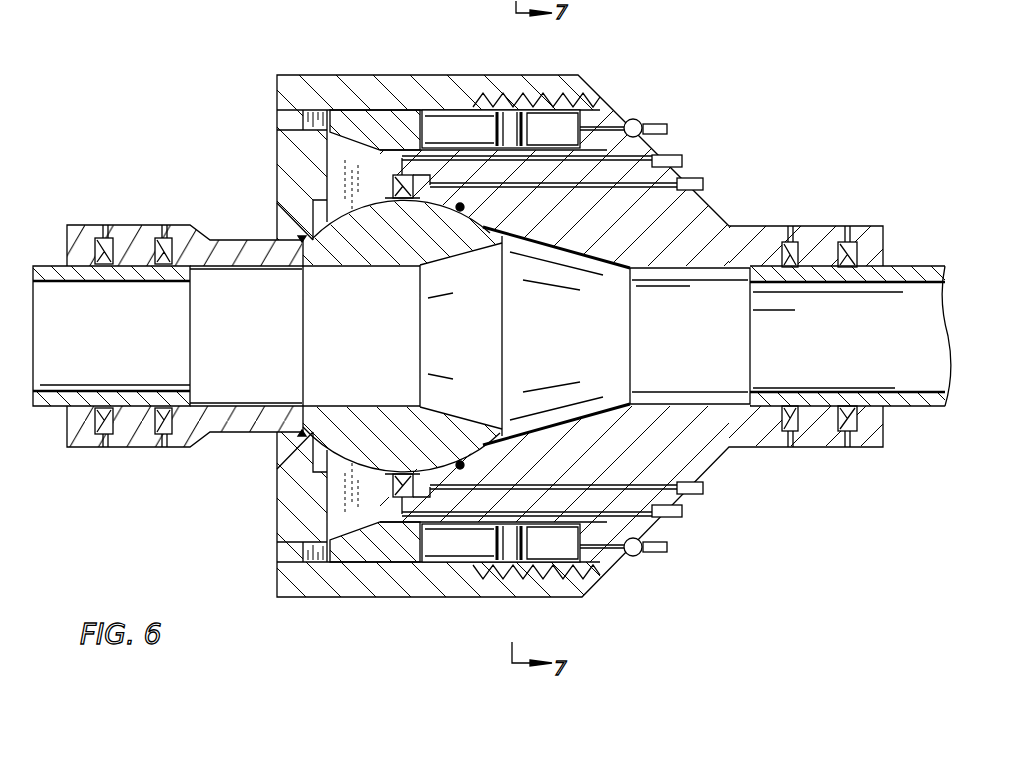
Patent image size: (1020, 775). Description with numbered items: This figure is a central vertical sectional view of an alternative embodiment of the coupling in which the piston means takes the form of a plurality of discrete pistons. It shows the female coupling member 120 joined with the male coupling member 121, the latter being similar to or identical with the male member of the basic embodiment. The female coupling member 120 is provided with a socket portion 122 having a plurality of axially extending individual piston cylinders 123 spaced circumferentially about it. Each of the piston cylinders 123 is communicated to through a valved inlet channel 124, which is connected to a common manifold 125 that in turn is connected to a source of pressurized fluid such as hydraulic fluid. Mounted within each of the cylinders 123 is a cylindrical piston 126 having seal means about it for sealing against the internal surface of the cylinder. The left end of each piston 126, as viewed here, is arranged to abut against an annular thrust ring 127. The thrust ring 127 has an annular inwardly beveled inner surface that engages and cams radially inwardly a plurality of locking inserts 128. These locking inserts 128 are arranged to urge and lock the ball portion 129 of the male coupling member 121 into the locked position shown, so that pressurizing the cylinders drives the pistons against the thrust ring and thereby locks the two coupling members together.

The female coupling member 120 is at (754, 224).
The male coupling member 121 is at (240, 440).
The socket portion 122 is at (683, 208).
The piston cylinders 123 is at (585, 92).
The valved inlet channel 124 is at (602, 130).
The manifold 125 is at (648, 116).
The cylindrical piston 126 is at (445, 123).
The annular thrust ring 127 is at (367, 117).
The locking inserts 128 is at (337, 153).
The ball portion 129 is at (378, 430).